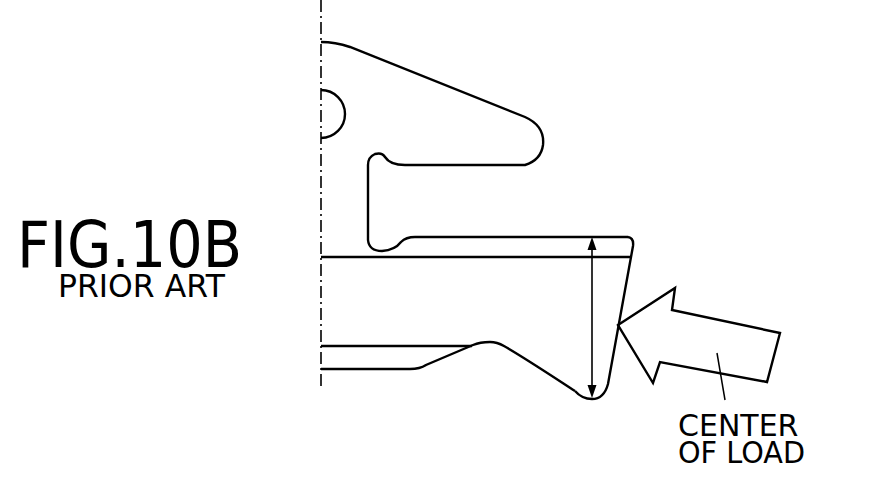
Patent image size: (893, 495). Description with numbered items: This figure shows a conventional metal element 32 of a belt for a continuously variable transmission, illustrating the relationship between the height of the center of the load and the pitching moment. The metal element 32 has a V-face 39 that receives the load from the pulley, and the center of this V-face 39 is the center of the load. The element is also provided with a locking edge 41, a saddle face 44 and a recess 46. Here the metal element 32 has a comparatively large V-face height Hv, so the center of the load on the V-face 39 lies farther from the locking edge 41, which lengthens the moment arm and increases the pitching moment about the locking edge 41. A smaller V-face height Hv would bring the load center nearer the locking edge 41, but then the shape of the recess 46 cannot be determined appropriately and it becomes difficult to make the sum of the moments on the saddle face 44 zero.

The metal element 32 is at (490, 92).
The locking edge 41 is at (525, 290).
The saddle face 44 is at (437, 237).
The V-face 39 is at (629, 282).
The recess 46 is at (498, 345).
The V-face height Hv is at (591, 322).